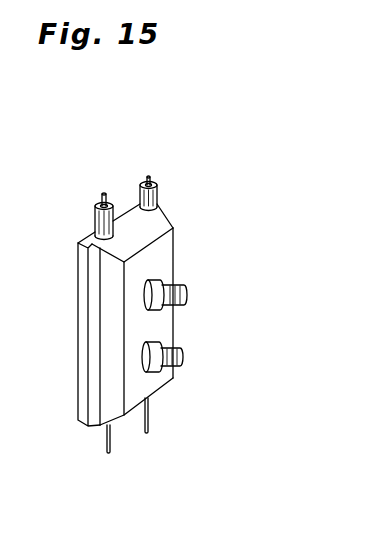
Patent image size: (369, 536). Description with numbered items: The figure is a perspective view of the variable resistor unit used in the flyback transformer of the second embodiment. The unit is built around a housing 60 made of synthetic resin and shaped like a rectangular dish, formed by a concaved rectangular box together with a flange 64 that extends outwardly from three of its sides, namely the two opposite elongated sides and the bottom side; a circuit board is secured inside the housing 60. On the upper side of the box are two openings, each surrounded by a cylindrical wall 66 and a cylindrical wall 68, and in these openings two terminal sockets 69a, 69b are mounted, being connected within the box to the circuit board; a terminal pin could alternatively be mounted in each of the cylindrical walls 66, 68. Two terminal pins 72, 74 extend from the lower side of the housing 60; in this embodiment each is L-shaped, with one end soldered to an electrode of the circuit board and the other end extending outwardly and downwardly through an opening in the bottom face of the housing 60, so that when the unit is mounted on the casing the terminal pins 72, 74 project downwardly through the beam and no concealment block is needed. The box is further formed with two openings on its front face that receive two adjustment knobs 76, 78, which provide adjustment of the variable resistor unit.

The housing 60 is at (168, 252).
The flange 64 is at (79, 292).
The cylindrical wall 66 is at (100, 222).
The cylindrical wall 68 is at (158, 194).
The terminal socket 69a is at (104, 193).
The terminal socket 69b is at (151, 178).
The terminal pin 72 is at (112, 445).
The terminal pin 74 is at (151, 418).
The adjustment knob 76 is at (187, 297).
The adjustment knob 78 is at (182, 358).